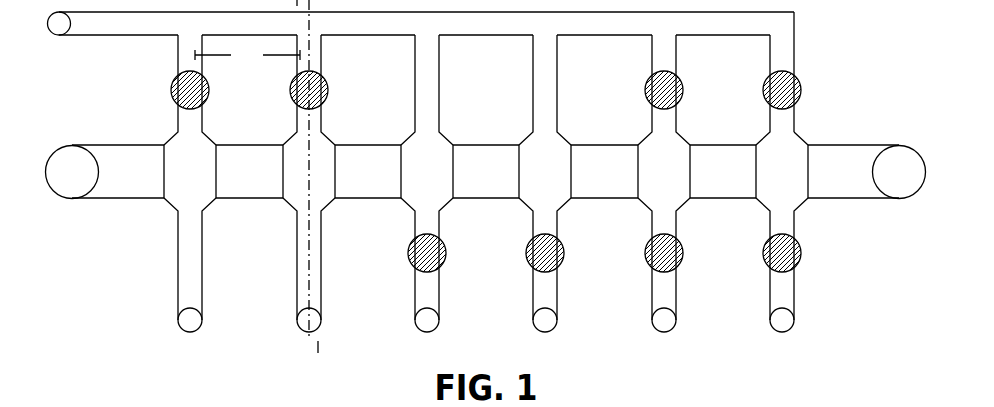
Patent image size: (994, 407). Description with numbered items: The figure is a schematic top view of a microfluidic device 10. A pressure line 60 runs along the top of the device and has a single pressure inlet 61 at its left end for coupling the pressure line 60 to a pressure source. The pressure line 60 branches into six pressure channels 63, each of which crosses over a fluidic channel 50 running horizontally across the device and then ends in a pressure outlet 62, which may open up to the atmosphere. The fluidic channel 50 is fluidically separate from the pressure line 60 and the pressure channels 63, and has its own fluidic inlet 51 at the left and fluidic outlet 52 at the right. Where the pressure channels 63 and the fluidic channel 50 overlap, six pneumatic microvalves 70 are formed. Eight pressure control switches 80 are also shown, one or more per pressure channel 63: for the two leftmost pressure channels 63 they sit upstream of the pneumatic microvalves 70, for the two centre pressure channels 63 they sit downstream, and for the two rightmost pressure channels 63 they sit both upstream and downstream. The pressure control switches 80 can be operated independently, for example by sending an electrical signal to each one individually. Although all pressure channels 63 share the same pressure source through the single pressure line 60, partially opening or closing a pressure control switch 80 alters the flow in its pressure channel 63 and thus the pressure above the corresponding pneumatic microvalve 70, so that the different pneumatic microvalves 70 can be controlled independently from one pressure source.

The microfluidic device 10 is at (486, 176).
The fluidic channel 50 is at (140, 150).
The fluidic inlet 51 is at (67, 178).
The fluidic outlet 52 is at (909, 163).
The pressure line 60 is at (152, 25).
The pressure inlet 61 is at (54, 33).
The pressure outlet 62 is at (797, 323).
The pressure channel 63 is at (247, 56).
The pneumatic microvalve 70 is at (177, 198).
The pressure control switch 80 is at (198, 95).